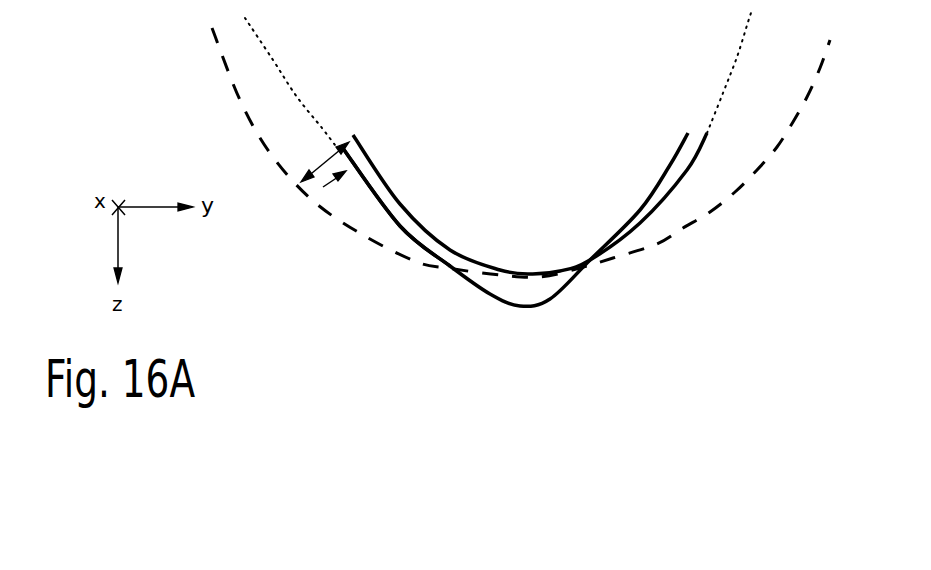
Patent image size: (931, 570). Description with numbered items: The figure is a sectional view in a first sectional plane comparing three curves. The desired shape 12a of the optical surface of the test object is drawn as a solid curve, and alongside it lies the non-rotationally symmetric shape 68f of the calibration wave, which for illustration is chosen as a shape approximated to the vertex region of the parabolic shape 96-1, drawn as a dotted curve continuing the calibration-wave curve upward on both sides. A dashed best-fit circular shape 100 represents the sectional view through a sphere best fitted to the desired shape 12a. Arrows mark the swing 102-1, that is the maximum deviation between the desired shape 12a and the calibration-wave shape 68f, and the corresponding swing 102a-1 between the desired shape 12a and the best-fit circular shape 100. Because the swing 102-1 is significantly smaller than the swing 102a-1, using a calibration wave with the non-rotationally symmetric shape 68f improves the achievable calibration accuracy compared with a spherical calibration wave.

The best-fit circular shape 100 is at (236, 97).
The parabolic shape 96-1 is at (264, 50).
The swing 102-1 is at (372, 149).
The swing 102a-1 is at (306, 178).
The desired shape 12a is at (578, 281).
The non-rotationally symmetric shape 68f is at (366, 190).